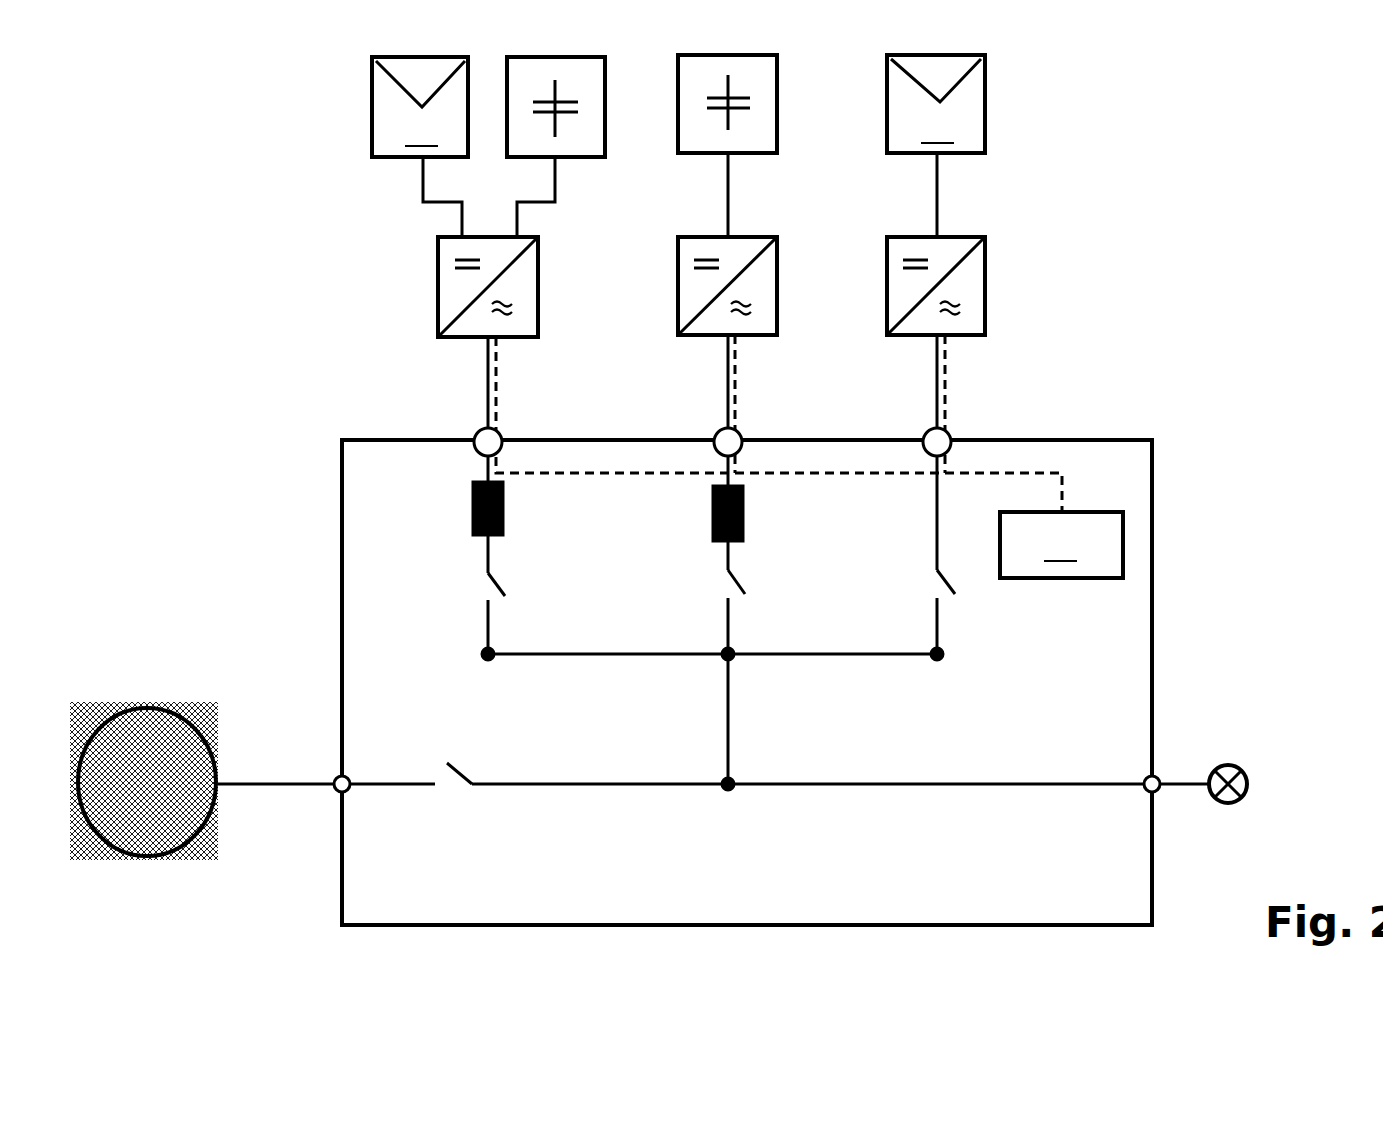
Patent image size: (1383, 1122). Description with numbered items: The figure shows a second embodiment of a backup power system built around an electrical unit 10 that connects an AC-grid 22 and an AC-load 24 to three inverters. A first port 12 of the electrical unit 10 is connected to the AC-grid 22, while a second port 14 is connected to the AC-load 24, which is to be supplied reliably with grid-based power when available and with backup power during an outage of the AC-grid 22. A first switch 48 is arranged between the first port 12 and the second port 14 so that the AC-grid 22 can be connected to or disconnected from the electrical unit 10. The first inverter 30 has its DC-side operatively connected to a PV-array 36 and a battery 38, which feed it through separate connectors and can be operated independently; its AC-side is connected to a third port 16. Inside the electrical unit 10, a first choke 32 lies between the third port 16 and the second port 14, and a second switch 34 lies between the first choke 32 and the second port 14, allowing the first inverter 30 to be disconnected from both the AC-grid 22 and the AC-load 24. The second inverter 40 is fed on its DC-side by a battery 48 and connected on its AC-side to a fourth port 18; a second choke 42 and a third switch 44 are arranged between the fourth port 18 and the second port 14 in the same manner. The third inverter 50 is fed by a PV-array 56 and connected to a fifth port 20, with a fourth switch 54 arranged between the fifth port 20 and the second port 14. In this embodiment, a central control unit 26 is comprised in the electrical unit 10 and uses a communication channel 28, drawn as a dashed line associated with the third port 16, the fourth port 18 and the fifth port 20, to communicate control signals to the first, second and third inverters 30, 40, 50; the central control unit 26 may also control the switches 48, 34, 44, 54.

The electrical unit 10 is at (390, 481).
The first port 12 is at (345, 790).
The second port 14 is at (1147, 778).
The third port 16 is at (499, 433).
The fourth port 18 is at (740, 432).
The fifth port 20 is at (949, 432).
The AC-grid 22 is at (80, 703).
The AC-load 24 is at (1243, 768).
The central control unit 26 is at (1061, 545).
The communication channel 28 is at (1030, 473).
The first inverter 30 is at (538, 300).
The first choke 32 is at (503, 513).
The second switch 34 is at (478, 590).
The PV-array 36 is at (420, 147).
The battery 38 is at (588, 158).
The second inverter 40 is at (777, 300).
The second choke 42 is at (743, 517).
The third switch 44 is at (718, 590).
The first switch 48 is at (440, 764).
The third inverter 50 is at (985, 300).
The fourth switch 54 is at (932, 590).
The PV-array 56 is at (936, 146).